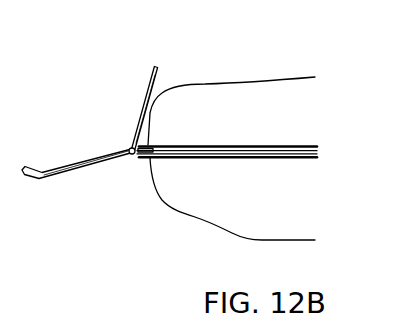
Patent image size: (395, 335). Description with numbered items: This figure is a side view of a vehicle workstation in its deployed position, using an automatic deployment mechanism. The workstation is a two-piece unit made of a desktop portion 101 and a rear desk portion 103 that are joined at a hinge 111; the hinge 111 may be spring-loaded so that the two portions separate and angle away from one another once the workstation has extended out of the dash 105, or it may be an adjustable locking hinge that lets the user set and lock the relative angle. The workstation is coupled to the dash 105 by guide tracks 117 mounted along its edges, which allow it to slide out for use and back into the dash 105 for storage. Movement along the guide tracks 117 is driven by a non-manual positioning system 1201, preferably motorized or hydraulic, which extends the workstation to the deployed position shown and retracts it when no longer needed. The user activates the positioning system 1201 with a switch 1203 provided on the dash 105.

The desktop portion 101 is at (66, 169).
The rear desk portion 103 is at (141, 97).
The dash 105 is at (207, 128).
The hinge 111 is at (133, 156).
The guide tracks 117 is at (225, 159).
The positioning system 1201 is at (272, 145).
The switch 1203 is at (213, 83).